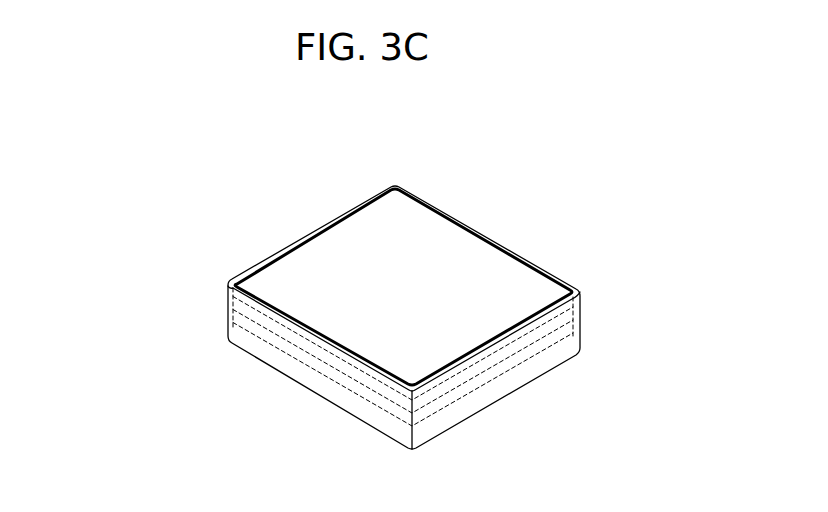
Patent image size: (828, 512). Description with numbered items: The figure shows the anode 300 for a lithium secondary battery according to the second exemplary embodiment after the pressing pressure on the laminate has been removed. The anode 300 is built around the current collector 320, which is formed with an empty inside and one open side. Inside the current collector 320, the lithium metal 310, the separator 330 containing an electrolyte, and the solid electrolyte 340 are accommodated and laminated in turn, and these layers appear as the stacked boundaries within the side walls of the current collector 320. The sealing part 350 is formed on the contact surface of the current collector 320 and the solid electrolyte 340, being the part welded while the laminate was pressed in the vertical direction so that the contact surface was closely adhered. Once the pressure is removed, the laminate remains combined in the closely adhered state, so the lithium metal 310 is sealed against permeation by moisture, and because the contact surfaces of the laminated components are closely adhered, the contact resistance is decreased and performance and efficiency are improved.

The anode 300 is at (552, 223).
The lithium metal 310 is at (230, 316).
The current collector 320 is at (255, 366).
The separator 330 is at (229, 300).
The solid electrolyte 340 is at (228, 283).
The sealing part 350 is at (307, 232).